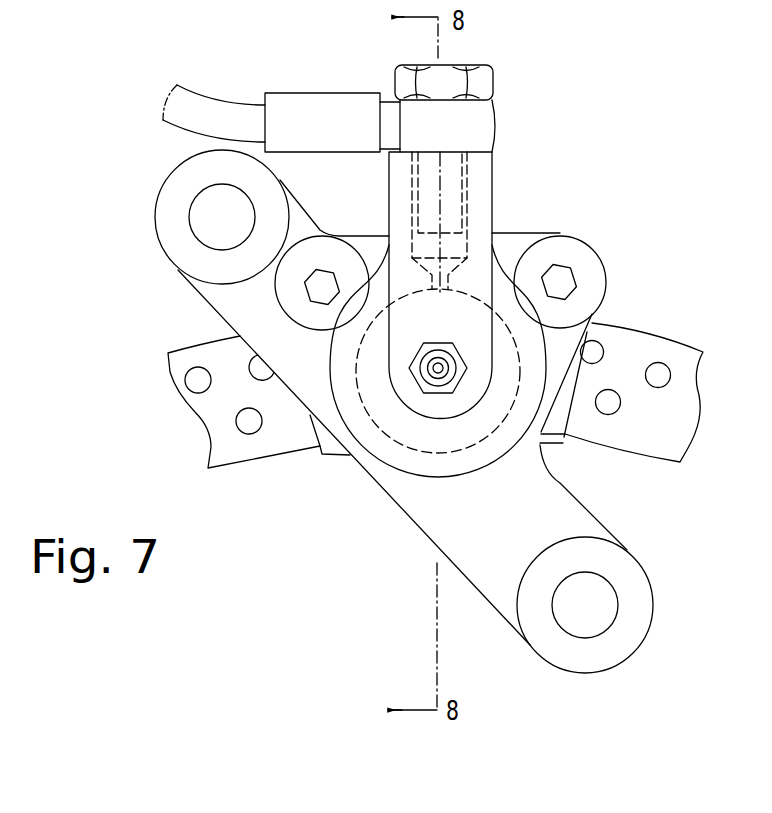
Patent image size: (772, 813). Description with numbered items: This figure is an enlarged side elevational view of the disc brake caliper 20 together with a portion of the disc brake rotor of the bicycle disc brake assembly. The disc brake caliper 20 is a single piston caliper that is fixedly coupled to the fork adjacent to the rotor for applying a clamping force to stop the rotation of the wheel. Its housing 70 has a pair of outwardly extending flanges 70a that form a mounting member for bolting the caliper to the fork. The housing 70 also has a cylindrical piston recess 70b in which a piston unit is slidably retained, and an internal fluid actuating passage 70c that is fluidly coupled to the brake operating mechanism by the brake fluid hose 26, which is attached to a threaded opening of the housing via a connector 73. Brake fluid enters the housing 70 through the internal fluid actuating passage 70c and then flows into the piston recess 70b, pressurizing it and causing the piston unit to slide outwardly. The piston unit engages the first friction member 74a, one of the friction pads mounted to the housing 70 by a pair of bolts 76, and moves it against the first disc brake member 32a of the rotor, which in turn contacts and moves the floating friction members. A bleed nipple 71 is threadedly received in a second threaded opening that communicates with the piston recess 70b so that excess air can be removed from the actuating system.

The disc brake caliper 20 is at (553, 110).
The brake fluid hose 26 is at (237, 110).
The first disc brake member 32a is at (654, 326).
The housing 70 is at (517, 222).
The outwardly extending flanges 70a is at (280, 177).
The cylindrical piston recess 70b is at (446, 440).
The internal fluid actuating passage 70c is at (447, 273).
The bleed nipple 71 is at (430, 393).
The connector 73 is at (493, 80).
The first friction member 74a is at (318, 437).
The bolts 76 is at (313, 237).